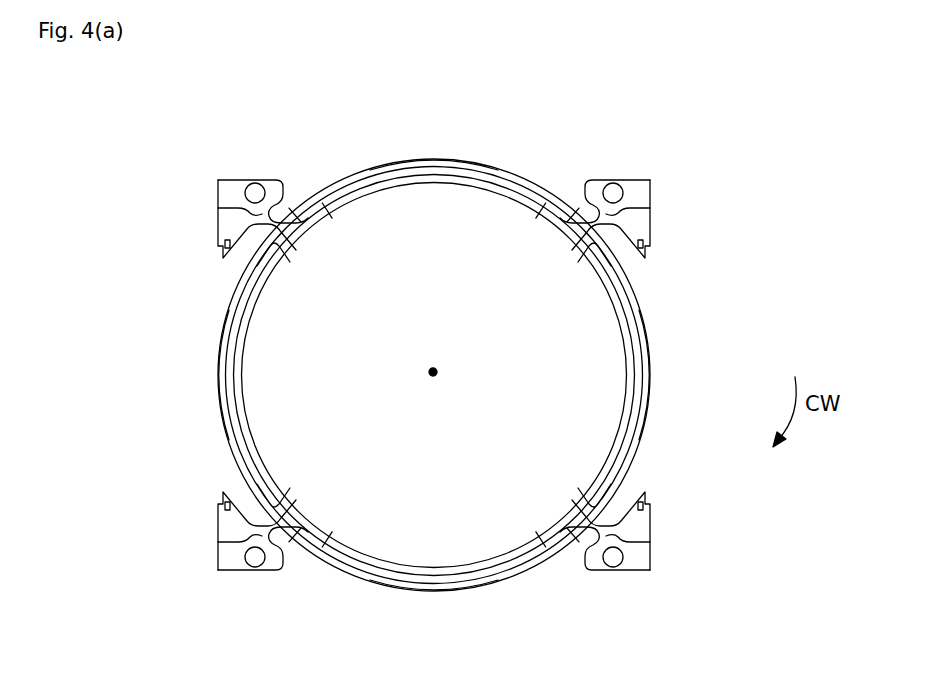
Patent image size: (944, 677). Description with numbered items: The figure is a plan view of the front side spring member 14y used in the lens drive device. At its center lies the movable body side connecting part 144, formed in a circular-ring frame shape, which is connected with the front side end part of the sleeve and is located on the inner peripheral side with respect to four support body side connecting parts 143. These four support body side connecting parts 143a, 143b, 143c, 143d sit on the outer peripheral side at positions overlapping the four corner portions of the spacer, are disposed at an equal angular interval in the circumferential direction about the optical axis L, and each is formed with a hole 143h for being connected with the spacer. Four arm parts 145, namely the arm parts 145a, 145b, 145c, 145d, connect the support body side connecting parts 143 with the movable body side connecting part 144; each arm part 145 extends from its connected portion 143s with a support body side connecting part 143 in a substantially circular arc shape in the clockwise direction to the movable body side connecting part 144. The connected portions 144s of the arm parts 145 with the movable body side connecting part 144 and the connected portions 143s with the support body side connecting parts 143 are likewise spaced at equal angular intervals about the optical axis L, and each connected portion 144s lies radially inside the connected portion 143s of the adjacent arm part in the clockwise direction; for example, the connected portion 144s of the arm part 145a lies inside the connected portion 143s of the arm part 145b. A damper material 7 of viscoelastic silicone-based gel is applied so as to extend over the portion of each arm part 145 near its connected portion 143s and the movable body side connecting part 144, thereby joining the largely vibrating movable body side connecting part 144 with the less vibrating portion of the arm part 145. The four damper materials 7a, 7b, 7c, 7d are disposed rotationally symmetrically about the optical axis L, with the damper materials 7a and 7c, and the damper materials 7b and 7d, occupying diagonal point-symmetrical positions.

The front side spring member 14y is at (198, 331).
The movable body side connecting part 144 is at (620, 320).
The connected portion 144s is at (290, 247).
The arm part 145 is at (429, 384).
The arm part 145a is at (651, 384).
The arm part 145b is at (417, 592).
The arm part 145c is at (218, 400).
The arm part 145d is at (433, 159).
The support body side connecting part 143 is at (443, 378).
The support body side connecting part 143a is at (638, 180).
The support body side connecting part 143b is at (633, 568).
The support body side connecting part 143c is at (245, 568).
The support body side connecting part 143d is at (233, 183).
The hole 143h is at (262, 186).
The connected portion 143s is at (218, 208).
The damper material 7 is at (495, 375).
The damper material 7a is at (623, 250).
The damper material 7b is at (548, 527).
The damper material 7c is at (277, 493).
The damper material 7d is at (322, 222).
The optical axis L is at (437, 372).